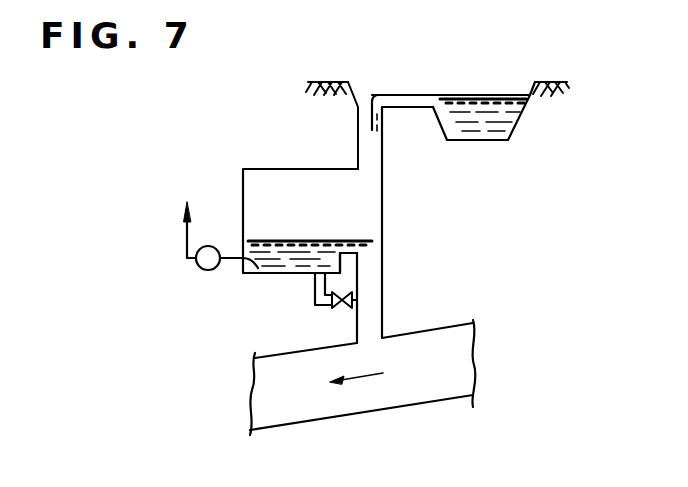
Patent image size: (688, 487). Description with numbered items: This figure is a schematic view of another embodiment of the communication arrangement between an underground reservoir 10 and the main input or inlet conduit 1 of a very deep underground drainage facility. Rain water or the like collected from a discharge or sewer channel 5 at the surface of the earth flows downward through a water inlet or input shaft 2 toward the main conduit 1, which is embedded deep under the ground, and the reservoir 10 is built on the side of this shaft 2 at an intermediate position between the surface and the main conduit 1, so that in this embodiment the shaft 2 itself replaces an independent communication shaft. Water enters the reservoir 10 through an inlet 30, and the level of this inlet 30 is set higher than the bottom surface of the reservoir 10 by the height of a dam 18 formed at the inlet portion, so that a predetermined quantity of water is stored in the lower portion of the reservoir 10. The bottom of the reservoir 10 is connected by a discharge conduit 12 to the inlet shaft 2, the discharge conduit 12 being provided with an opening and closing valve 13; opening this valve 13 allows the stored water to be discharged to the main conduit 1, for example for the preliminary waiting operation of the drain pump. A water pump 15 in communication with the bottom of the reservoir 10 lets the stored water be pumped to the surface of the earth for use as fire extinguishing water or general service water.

The main conduit 1 is at (417, 397).
The water inlet shaft 2 is at (370, 288).
The discharge or sewer channel 5 is at (492, 97).
The underground reservoir 10 is at (260, 202).
The discharge conduit 12 is at (313, 293).
The opening and closing valve 13 is at (337, 310).
The water pump 15 is at (202, 270).
The dam 18 is at (347, 267).
The inlet 30 is at (343, 213).